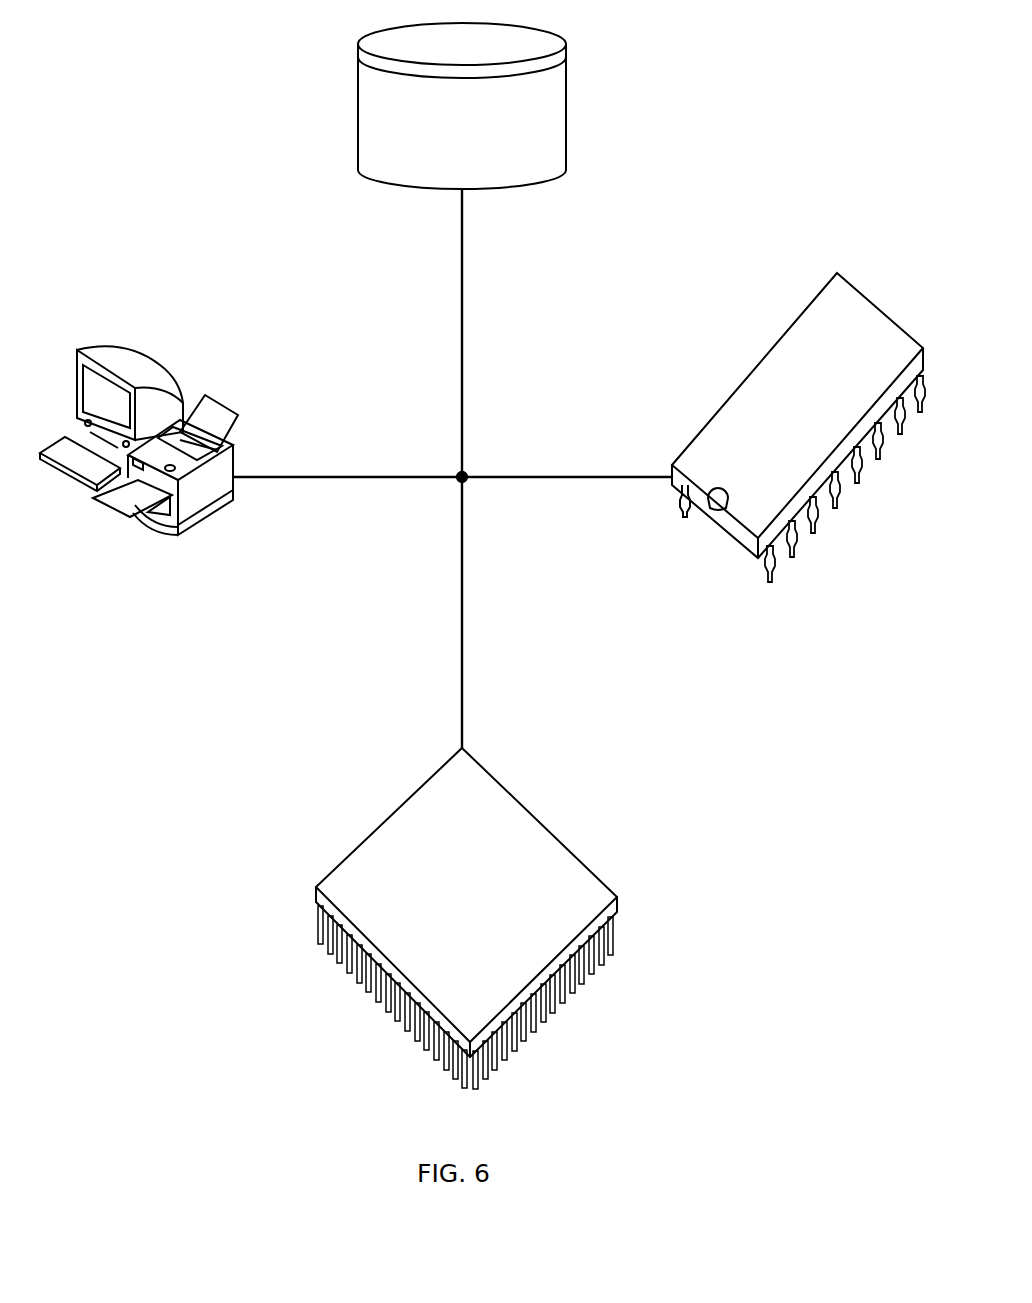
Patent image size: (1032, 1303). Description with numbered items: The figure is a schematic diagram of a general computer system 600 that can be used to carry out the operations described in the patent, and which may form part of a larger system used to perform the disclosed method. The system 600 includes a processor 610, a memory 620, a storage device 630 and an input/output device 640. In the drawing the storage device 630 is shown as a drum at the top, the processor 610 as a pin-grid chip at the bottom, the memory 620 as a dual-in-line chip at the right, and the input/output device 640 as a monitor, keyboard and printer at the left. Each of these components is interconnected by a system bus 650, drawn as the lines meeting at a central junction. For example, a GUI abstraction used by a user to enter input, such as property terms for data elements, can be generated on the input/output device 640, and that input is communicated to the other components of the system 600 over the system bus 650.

The general computer system 600 is at (166, 944).
The processor 610 is at (387, 815).
The memory 620 is at (753, 368).
The storage device 630 is at (358, 105).
The input/output device 640 is at (77, 350).
The system bus 650 is at (360, 477).